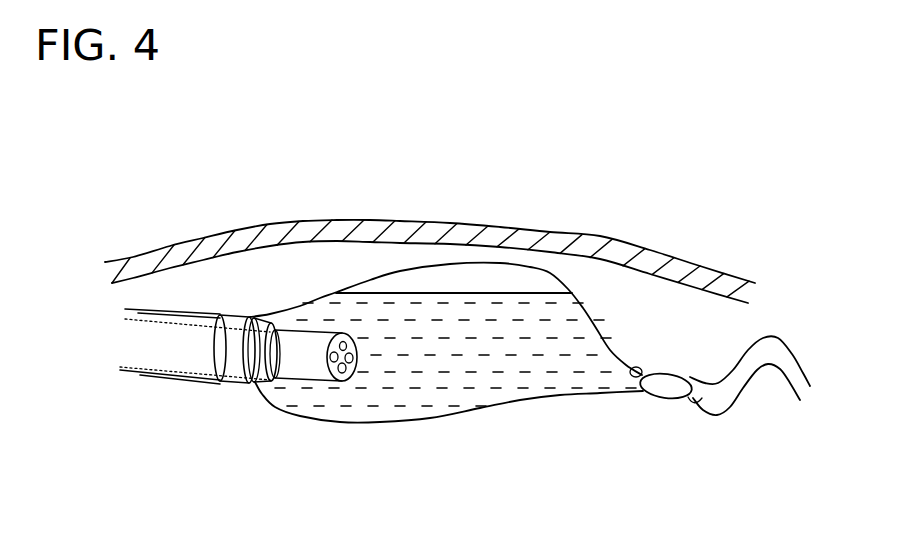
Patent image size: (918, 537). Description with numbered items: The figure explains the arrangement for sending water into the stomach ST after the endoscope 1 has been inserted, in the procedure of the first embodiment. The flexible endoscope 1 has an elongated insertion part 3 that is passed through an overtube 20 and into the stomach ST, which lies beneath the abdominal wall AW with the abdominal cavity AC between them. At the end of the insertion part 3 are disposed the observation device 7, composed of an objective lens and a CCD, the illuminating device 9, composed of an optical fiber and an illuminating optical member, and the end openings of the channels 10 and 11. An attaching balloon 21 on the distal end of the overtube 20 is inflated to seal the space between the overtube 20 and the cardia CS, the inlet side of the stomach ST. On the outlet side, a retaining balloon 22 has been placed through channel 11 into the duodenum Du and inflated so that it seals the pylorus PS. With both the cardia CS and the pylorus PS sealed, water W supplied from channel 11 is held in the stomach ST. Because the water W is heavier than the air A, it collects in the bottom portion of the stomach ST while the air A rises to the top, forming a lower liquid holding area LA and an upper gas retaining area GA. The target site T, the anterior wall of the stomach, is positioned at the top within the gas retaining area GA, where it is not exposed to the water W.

The flexible endoscope 1 is at (96, 374).
The insertion part 3 is at (307, 380).
The observation device 7 is at (344, 373).
The illuminating device 9 is at (348, 338).
The channel 10 is at (352, 360).
The channel 11 is at (341, 343).
The overtube 20 is at (124, 372).
The attaching balloon 21 is at (218, 352).
The retaining balloon 22 is at (667, 384).
The abdominal wall AW is at (158, 258).
The cardia CS is at (201, 320).
The gas retaining area GA is at (408, 282).
The target site T is at (448, 263).
The air A is at (467, 278).
The stomach ST is at (583, 313).
The abdominal cavity AC is at (683, 298).
The pylorus PS is at (635, 367).
The duodenum Du is at (695, 403).
The water W is at (460, 370).
The liquid holding area LA is at (518, 387).